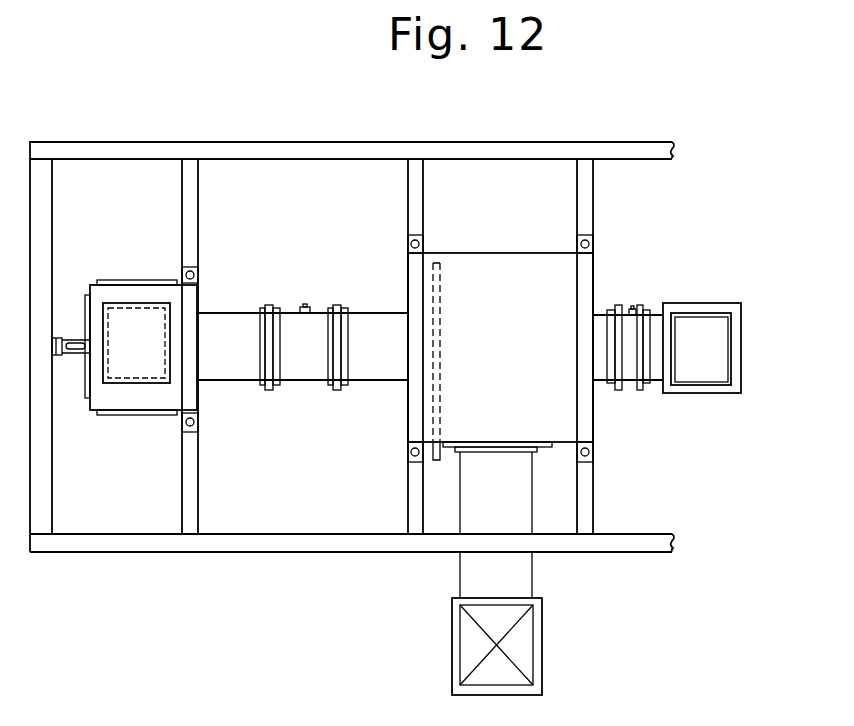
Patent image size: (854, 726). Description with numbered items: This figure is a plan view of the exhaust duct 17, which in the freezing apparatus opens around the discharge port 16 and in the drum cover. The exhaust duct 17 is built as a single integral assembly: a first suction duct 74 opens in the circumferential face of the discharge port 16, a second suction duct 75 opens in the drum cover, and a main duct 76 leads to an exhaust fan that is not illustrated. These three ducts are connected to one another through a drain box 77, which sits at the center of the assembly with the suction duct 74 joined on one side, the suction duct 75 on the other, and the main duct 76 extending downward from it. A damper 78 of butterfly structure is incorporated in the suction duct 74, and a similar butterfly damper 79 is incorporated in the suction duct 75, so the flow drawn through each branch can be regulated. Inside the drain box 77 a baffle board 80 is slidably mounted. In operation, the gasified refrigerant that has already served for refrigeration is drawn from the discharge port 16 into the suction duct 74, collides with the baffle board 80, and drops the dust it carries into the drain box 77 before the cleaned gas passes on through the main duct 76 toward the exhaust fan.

The discharge port 16 is at (136, 383).
The exhaust duct 17 is at (387, 308).
The suction duct 74 is at (137, 285).
The suction duct 75 is at (703, 303).
The main duct 76 is at (538, 636).
The drain box 77 is at (505, 262).
The damper 78 is at (303, 306).
The damper 79 is at (632, 305).
The baffle board 80 is at (441, 397).